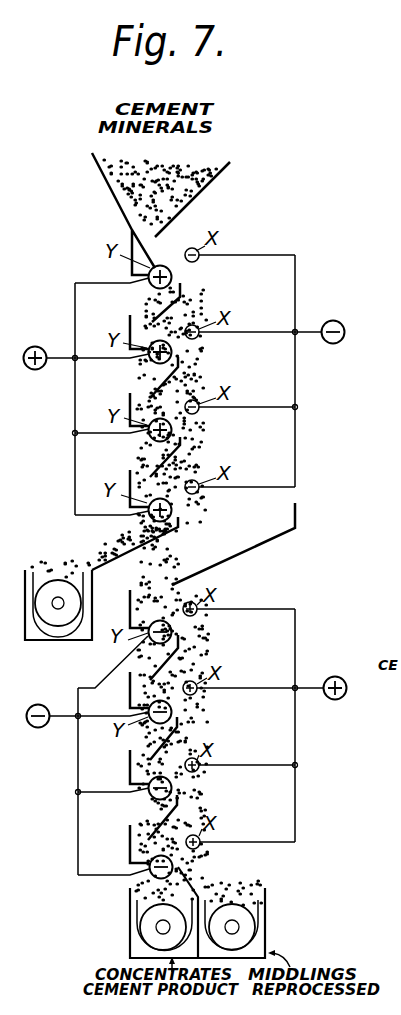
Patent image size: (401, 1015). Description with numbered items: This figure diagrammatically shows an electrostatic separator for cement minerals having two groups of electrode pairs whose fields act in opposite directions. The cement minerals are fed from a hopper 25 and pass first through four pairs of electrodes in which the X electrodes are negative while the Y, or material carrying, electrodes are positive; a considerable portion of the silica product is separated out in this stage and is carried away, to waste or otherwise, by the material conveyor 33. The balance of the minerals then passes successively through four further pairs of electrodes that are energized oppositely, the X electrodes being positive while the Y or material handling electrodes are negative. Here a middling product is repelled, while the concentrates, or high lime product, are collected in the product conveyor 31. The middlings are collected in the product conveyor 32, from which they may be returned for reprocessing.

The feed hopper 25 is at (181, 222).
The material conveyor 33 is at (59, 547).
The product conveyor 31 is at (117, 925).
The product conveyor 32 is at (277, 930).